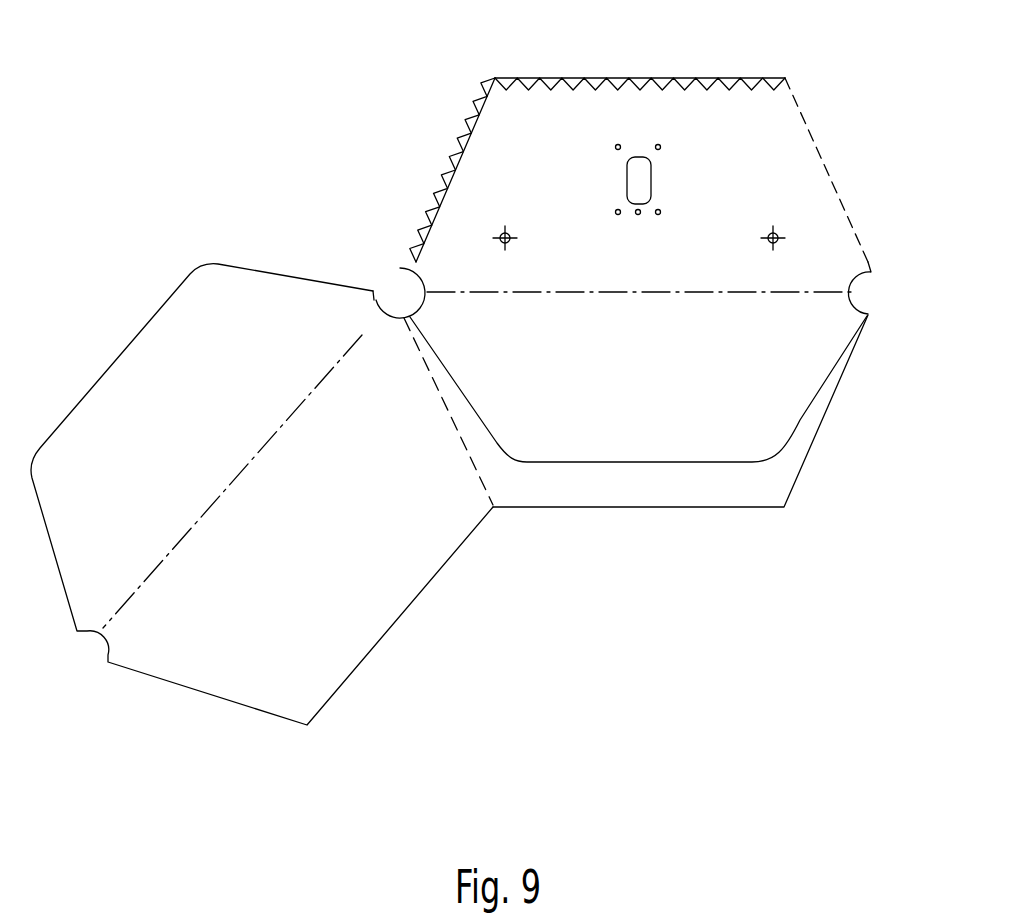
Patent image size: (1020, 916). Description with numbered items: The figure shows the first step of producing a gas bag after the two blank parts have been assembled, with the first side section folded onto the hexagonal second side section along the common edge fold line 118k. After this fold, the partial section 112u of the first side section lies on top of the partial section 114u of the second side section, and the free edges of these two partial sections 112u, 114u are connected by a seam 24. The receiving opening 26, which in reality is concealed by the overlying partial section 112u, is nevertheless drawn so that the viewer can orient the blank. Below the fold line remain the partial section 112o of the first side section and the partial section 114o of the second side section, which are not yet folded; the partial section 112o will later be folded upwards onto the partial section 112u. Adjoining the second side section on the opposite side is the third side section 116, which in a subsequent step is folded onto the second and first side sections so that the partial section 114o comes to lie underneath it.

The partial section 112u is at (563, 114).
The partial section 114u is at (640, 84).
The seam 24 is at (452, 177).
The edge fold line 118k is at (822, 160).
The receiving opening 26 is at (664, 178).
The partial section 112o is at (650, 392).
The partial section 114o is at (655, 497).
The third side section 116 is at (347, 537).